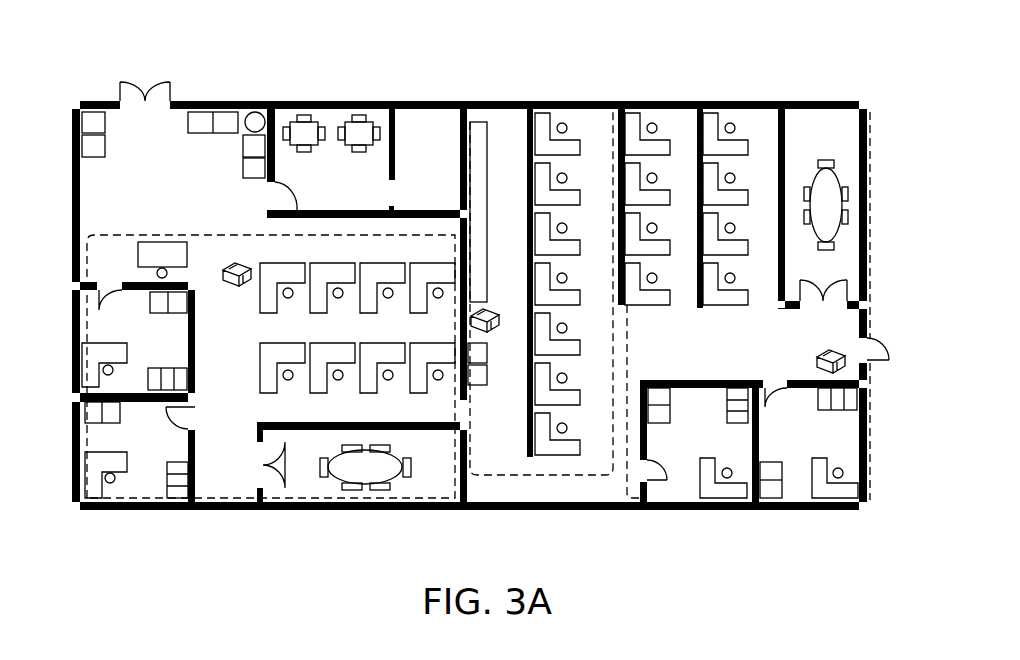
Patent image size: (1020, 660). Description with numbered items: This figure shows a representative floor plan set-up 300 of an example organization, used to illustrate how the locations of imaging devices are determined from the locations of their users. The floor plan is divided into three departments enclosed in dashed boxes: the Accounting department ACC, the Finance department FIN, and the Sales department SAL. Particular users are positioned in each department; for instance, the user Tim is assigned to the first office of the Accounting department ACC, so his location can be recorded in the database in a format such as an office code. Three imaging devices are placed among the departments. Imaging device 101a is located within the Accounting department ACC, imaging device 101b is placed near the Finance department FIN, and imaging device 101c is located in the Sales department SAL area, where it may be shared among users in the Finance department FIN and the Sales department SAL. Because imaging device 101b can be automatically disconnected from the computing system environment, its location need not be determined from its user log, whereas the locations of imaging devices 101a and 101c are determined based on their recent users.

The floor plan set-up 300 is at (456, 282).
The imaging device 101a is at (236, 262).
The imaging device 101b is at (497, 336).
The imaging device 101c is at (820, 354).
The Accounting department ACC is at (115, 235).
The Finance department FIN is at (540, 477).
The Sales department SAL is at (625, 496).